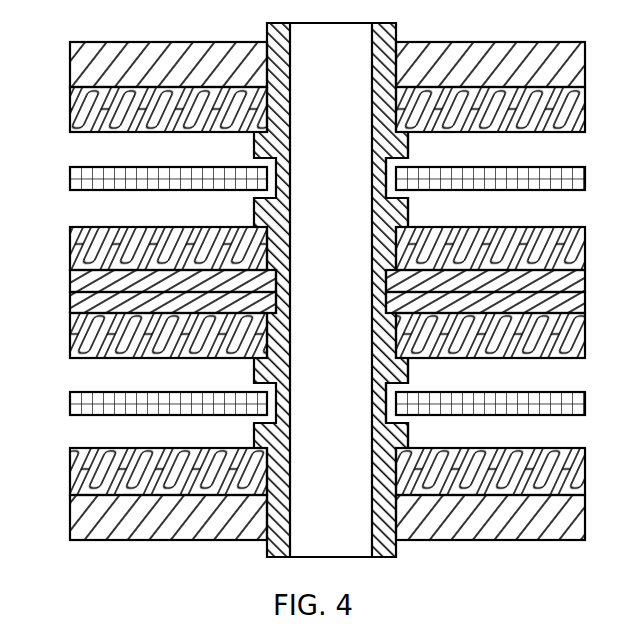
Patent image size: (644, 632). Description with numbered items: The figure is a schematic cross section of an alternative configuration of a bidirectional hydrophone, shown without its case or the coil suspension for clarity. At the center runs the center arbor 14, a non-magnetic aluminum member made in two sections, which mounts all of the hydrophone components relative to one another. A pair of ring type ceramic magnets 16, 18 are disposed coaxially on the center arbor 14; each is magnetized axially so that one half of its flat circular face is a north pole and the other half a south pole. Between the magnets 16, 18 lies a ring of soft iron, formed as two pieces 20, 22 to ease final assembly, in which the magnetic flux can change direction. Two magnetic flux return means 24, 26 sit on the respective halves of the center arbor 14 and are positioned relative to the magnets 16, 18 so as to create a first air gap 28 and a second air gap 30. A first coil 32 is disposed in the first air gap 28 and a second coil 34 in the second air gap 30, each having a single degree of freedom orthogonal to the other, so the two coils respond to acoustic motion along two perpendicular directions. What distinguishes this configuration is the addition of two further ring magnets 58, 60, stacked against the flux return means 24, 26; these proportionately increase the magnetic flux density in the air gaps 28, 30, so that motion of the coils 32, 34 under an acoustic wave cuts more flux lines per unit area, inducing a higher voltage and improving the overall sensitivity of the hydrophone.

The center arbor 14 is at (283, 152).
The ring type ceramic magnet 16 is at (572, 250).
The ring type ceramic magnet 18 is at (575, 344).
The soft iron ring piece 20 is at (324, 295).
The soft iron ring piece 22 is at (568, 303).
The magnetic flux return means 24 is at (577, 80).
The magnetic flux return means 26 is at (88, 515).
The first air gap 28 is at (422, 212).
The second air gap 30 is at (423, 369).
The first coil 32 is at (568, 184).
The second coil 34 is at (82, 410).
The additional ring magnet 58 is at (83, 110).
The additional ring magnet 60 is at (568, 472).